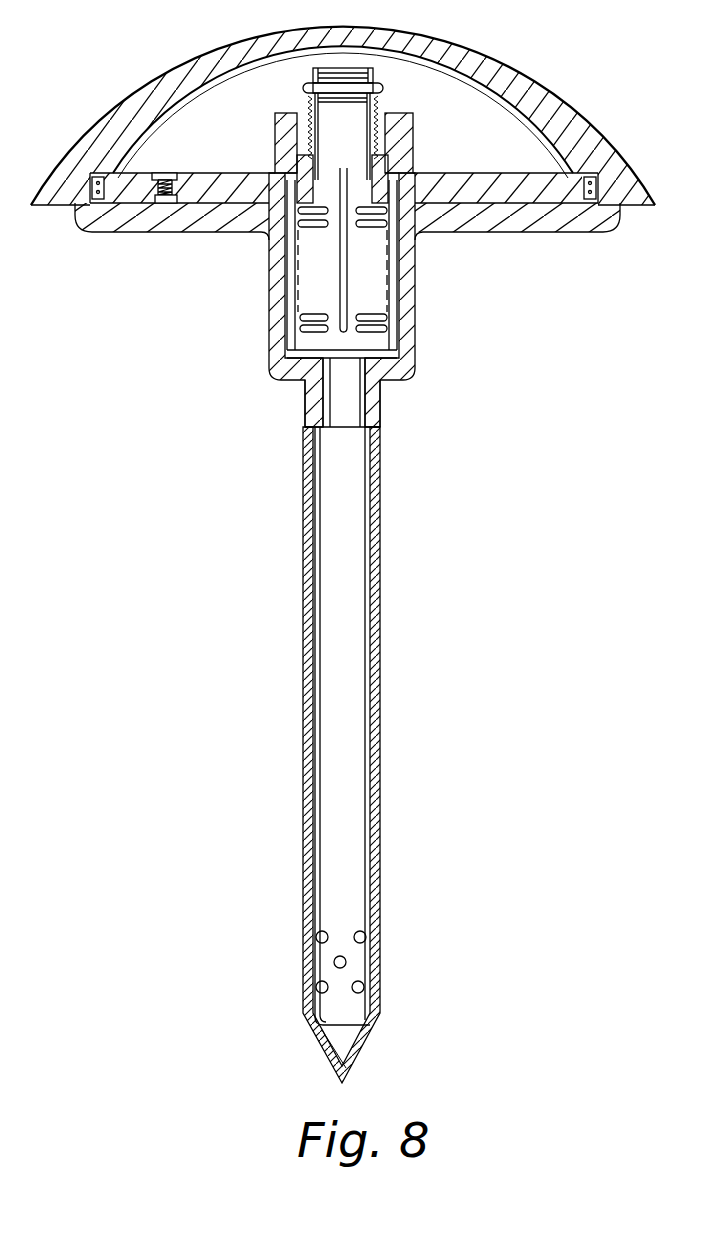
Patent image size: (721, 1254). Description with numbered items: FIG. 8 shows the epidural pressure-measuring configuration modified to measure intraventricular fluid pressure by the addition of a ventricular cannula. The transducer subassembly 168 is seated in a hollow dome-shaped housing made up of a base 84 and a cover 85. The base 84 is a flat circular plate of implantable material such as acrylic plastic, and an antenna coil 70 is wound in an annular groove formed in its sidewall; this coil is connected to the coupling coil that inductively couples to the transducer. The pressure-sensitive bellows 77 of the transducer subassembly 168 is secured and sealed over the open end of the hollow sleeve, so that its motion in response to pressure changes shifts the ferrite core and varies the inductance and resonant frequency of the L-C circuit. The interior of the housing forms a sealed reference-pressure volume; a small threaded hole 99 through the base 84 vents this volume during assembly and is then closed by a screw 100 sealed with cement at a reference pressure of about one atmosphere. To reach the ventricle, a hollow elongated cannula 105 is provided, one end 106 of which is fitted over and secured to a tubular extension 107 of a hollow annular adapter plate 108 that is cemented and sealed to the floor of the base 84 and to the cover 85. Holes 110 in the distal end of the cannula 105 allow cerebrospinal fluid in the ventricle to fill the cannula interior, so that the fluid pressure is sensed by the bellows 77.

The cap assembly 168 is at (383, 107).
The cover 85 is at (517, 78).
The antenna coil 70 is at (600, 178).
The base 84 is at (201, 173).
The threaded hole 99 is at (180, 156).
The screw 100 is at (170, 206).
The adapter plate 108 is at (505, 233).
The bellows 77 is at (376, 345).
The end of the cannula 106 is at (305, 398).
The tubular extension 107 is at (371, 441).
The cannula 105 is at (380, 572).
The holes 110 is at (346, 961).